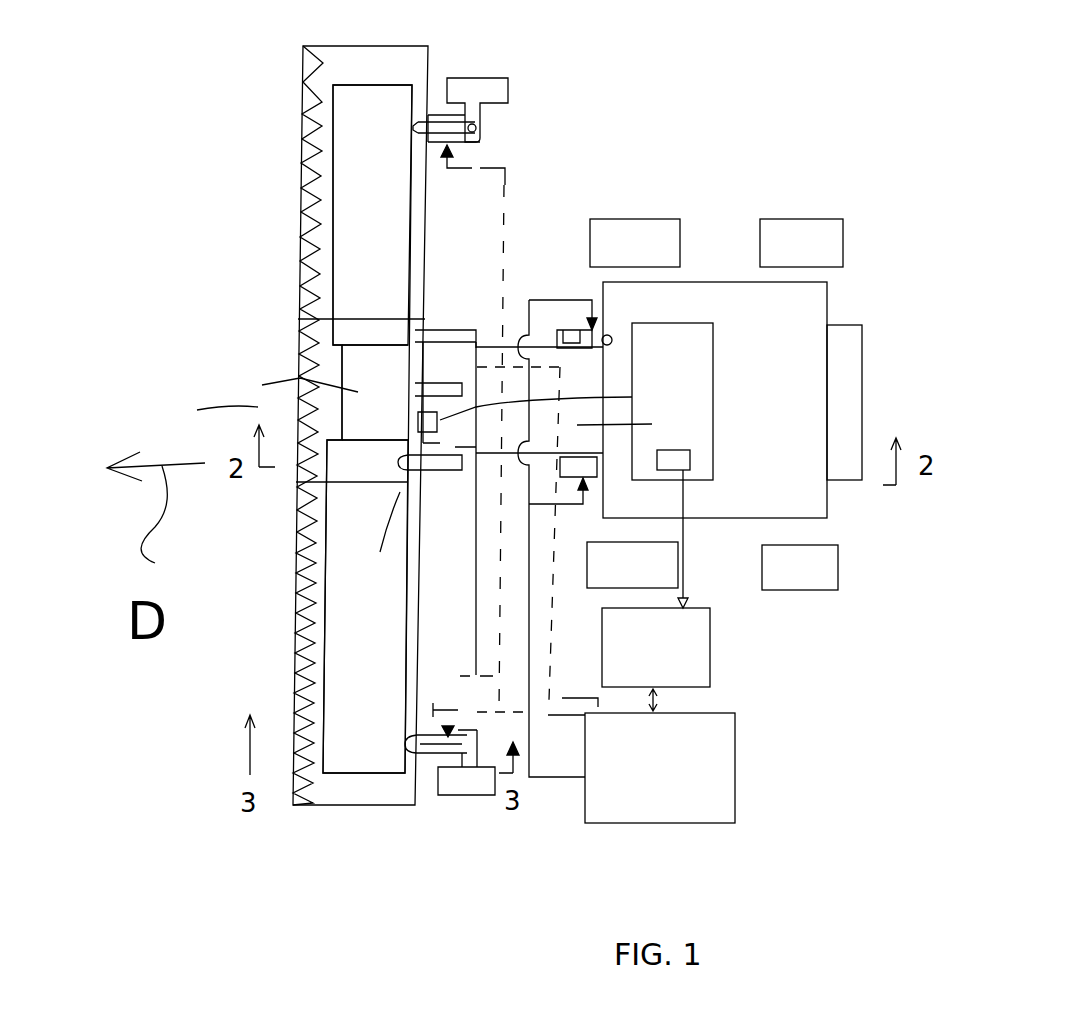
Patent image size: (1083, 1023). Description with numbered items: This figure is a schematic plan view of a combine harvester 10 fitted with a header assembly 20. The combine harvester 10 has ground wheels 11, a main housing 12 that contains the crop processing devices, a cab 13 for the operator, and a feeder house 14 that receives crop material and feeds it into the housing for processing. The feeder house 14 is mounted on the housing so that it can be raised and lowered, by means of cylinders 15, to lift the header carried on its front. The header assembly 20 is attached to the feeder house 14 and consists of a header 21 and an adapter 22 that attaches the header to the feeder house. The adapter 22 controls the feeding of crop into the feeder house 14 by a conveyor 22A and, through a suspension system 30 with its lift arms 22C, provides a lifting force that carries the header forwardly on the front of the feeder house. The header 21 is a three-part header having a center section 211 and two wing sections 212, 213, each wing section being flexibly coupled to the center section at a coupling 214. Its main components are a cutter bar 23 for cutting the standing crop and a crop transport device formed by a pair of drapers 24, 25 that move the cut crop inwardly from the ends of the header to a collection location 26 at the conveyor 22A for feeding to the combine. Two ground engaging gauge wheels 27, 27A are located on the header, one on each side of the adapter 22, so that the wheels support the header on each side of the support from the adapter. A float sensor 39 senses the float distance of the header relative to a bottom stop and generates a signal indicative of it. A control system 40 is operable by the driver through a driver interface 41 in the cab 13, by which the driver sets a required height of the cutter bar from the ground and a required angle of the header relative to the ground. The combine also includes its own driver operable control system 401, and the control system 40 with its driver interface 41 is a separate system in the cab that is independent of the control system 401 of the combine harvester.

The combine harvester 10 is at (733, 196).
The ground wheels 11 is at (650, 236).
The main housing 12 is at (800, 306).
The cab 13 is at (713, 350).
The feeder house 14 is at (636, 426).
The cylinders 15 is at (596, 334).
The header assembly 20 is at (539, 188).
The header 21 is at (350, 845).
The adapter 22 is at (465, 332).
The conveyor 22A is at (380, 377).
The lift arms 22C is at (441, 374).
The cutter bar 23 is at (292, 583).
The draper 24 is at (302, 288).
The draper 25 is at (352, 503).
The collection location 26 is at (358, 385).
The gauge wheel 27 is at (477, 93).
The gauge wheel 27A is at (452, 785).
The suspension system 30 is at (404, 503).
The float sensor 39 is at (558, 400).
The control system 40 is at (718, 762).
The driver interface 41 is at (708, 642).
The driver operable control system 401 is at (690, 450).
The center section 211 is at (255, 401).
The wing section 212 is at (335, 180).
The wing section 213 is at (330, 680).
The coupling 214 is at (303, 325).